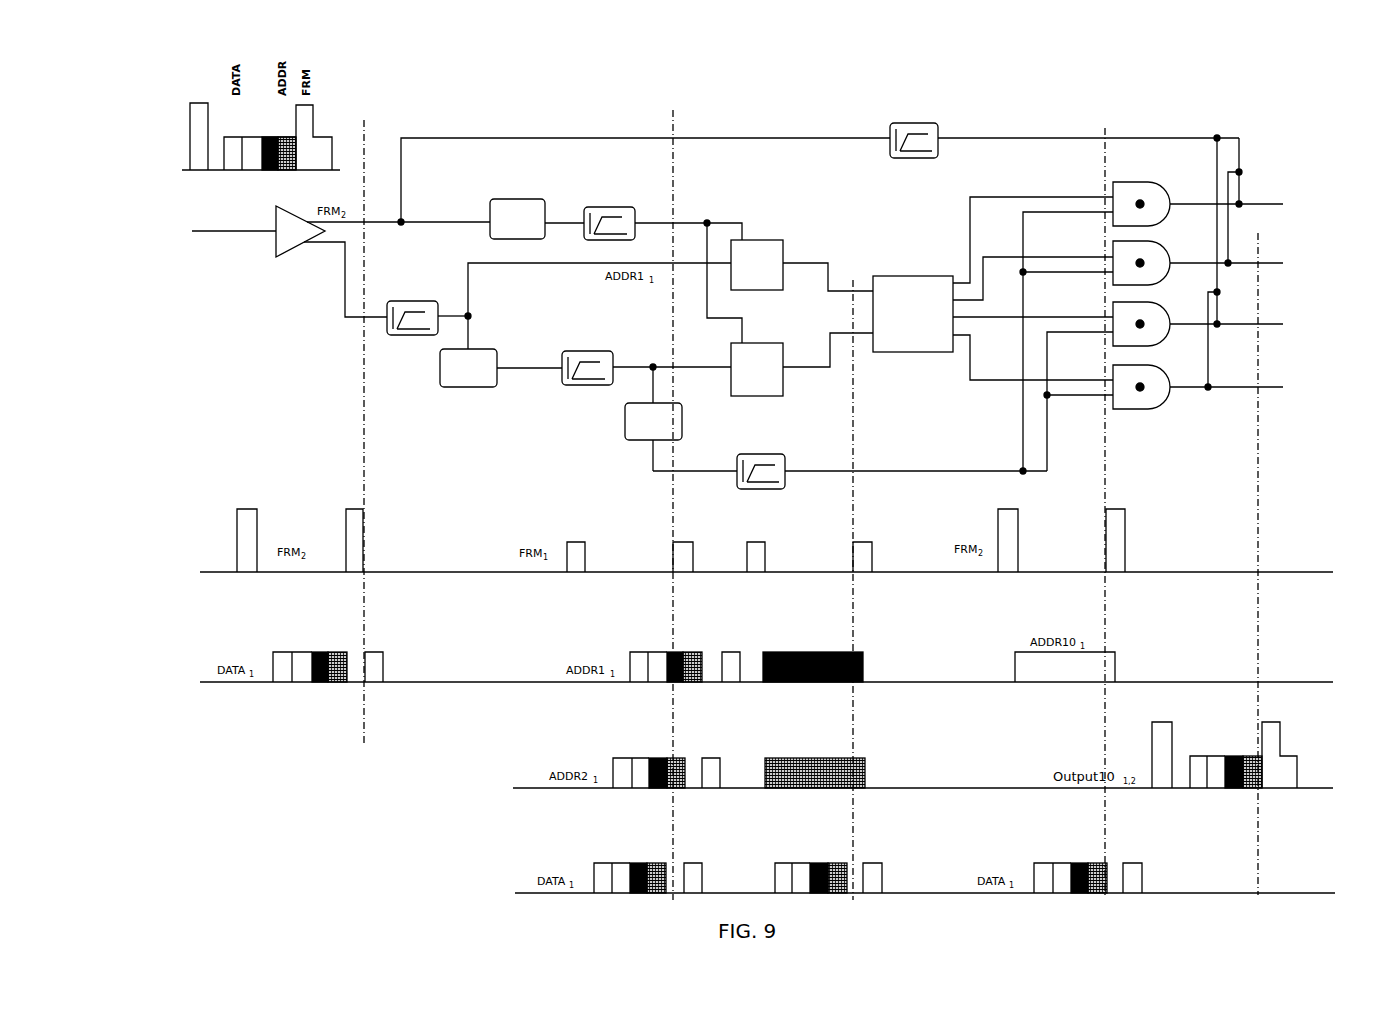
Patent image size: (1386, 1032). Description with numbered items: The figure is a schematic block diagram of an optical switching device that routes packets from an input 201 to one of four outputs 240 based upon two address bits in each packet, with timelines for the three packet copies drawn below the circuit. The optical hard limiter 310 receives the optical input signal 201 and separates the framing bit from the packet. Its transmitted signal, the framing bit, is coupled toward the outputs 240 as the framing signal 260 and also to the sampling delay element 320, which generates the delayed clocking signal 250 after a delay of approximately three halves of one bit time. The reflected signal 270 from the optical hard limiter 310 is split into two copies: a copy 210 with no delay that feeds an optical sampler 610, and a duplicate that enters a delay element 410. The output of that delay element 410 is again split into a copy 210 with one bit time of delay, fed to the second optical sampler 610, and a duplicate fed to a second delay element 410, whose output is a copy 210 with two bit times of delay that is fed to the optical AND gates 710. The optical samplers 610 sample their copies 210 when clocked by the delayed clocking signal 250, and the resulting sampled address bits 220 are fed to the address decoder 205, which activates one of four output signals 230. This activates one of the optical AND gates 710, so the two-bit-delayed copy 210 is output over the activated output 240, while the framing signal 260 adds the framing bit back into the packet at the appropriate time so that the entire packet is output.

The input 201 is at (213, 229).
The optical hard limiter 310 is at (295, 256).
The reflected signal 270 is at (345, 305).
The sampling delay element 320 is at (517, 194).
The delayed clocking signal 250 is at (661, 259).
The framing signal 260 is at (1052, 123).
The optical sampler 610 is at (793, 246).
The sampled address bit 220 is at (832, 281).
The copy 210 is at (559, 352).
The delay element 410 is at (561, 405).
The address decoder 205 is at (913, 337).
The output signal 230 is at (1033, 320).
The optical AND gate 710 is at (1163, 280).
The output 240 is at (1257, 267).